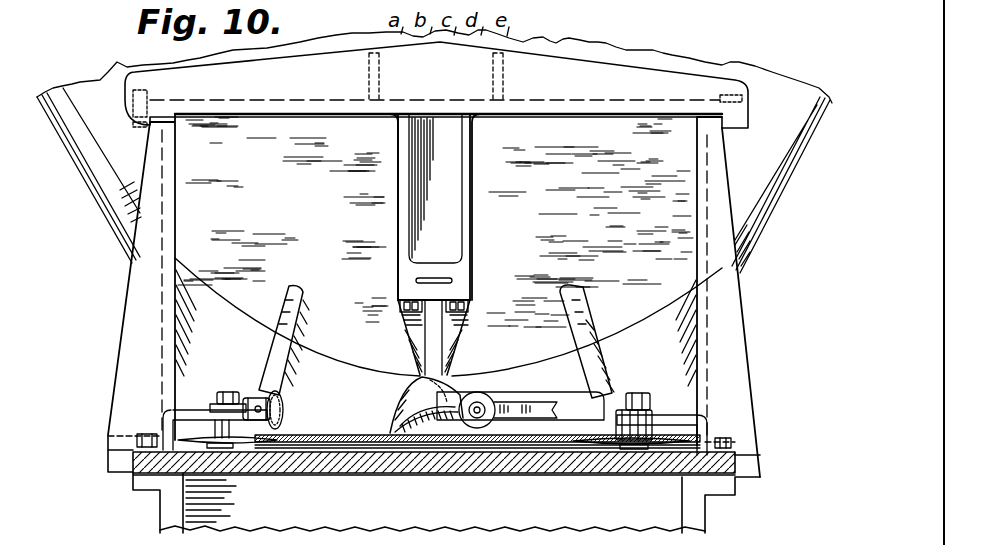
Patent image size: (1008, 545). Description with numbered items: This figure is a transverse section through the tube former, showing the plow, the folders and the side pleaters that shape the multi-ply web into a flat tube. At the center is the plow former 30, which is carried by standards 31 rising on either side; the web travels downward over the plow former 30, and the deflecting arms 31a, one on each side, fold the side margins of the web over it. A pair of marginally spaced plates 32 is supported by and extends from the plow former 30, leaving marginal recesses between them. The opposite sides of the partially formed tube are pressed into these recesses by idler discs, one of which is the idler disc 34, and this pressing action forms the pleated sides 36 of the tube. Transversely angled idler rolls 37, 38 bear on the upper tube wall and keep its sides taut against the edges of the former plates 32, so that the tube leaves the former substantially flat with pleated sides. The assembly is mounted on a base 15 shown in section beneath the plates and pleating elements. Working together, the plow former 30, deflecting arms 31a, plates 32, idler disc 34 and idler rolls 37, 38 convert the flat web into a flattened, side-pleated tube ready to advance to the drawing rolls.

The base plate 15 is at (502, 441).
The plow former 30 is at (447, 338).
The standards 31 is at (148, 222).
The deflecting arms 31a is at (275, 342).
The marginally spaced plates 32 is at (431, 443).
The idler disc 34 is at (187, 437).
The pleated sides 36 is at (278, 442).
The transversely angled idler roll 37 is at (284, 405).
The transversely angled idler roll 38 is at (478, 400).